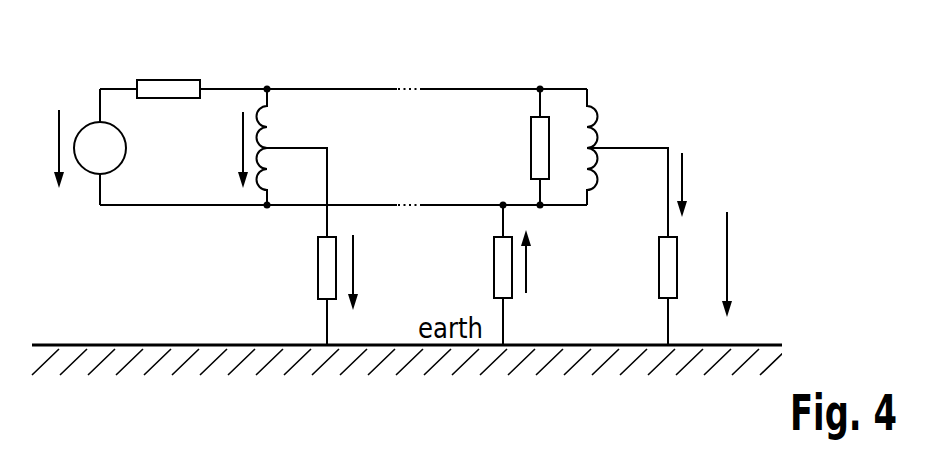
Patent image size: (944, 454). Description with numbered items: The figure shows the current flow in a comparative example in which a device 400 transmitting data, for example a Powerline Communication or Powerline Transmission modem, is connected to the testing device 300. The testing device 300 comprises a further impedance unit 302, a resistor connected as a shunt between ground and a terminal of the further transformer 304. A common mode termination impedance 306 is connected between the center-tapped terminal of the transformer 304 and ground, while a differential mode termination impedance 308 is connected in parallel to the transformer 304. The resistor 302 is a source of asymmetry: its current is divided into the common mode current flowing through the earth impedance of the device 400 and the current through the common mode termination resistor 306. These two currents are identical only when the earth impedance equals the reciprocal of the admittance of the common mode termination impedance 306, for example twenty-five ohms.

The testing device 300 is at (750, 67).
The further impedance unit 302 is at (512, 293).
The further transformer 304 is at (590, 107).
The common mode termination impedance 306 is at (658, 255).
The differential mode termination impedance 308 is at (533, 172).
The device transmitting data 400 is at (412, 68).